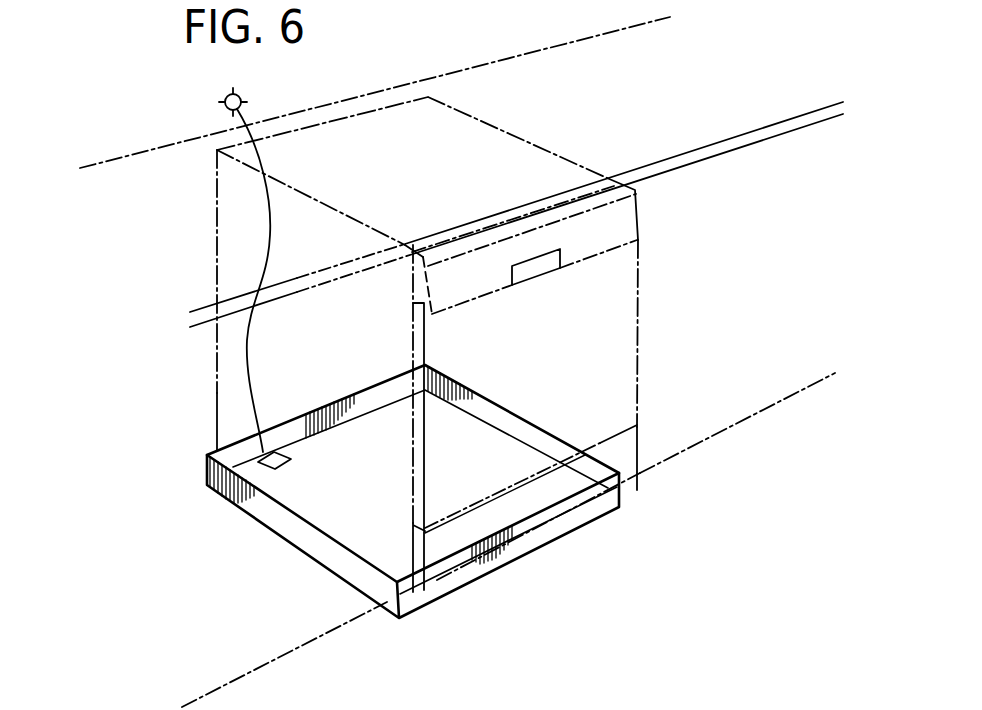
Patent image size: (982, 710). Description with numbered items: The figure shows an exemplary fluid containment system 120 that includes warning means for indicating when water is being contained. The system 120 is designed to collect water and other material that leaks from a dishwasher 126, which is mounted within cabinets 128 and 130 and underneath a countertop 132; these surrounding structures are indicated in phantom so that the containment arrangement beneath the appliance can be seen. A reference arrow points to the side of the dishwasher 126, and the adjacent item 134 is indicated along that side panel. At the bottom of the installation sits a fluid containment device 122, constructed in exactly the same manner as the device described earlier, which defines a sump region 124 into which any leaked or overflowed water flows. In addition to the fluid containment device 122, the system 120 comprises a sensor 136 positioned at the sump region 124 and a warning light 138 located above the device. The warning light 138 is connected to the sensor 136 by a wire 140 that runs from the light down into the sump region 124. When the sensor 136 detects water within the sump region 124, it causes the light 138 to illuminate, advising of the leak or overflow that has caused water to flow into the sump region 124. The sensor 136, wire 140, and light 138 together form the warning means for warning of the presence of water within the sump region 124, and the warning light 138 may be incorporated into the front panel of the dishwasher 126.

The fluid containment system 120 is at (366, 491).
The fluid containment device 122 is at (290, 530).
The sump region 124 is at (358, 530).
The dishwasher 126 is at (492, 344).
The cabinet 128 is at (255, 670).
The cabinet 130 is at (703, 443).
The countertop 132 is at (710, 157).
The side panel 134 is at (648, 337).
The sensor 136 is at (260, 457).
The warning light 138 is at (225, 102).
The wire 140 is at (247, 348).